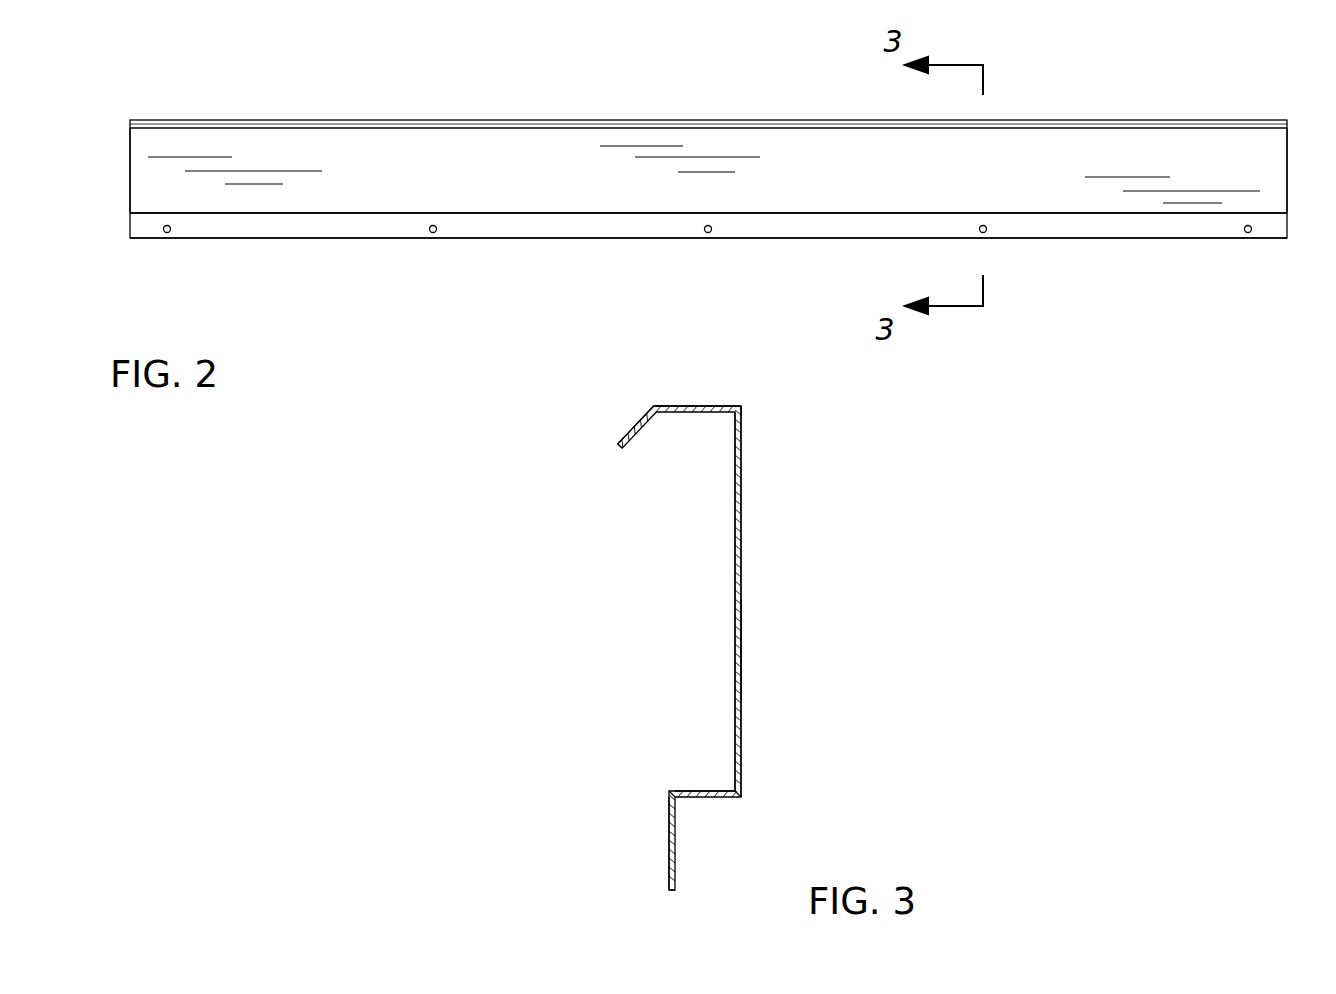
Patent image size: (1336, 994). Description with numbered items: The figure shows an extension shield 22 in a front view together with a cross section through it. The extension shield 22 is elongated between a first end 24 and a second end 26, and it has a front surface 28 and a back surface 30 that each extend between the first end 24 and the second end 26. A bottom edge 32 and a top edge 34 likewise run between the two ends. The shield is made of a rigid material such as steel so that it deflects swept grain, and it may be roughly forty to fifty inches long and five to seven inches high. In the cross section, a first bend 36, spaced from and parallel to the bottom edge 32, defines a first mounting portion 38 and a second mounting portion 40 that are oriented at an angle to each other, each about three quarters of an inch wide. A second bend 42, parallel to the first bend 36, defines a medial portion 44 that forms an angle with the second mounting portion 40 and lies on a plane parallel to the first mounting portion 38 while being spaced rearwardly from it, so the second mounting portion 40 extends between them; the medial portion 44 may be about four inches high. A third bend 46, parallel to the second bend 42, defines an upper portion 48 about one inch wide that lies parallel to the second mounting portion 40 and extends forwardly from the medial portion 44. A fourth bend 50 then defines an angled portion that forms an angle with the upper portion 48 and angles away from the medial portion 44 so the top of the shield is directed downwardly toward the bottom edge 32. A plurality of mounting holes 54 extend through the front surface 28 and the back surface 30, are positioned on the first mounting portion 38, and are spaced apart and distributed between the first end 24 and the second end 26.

In FIG. 2, the extension shield 22 is at (1222, 96).
In FIG. 3, the extension shield 22 is at (770, 447).
In FIG. 2, the first end 24 is at (130, 172).
In FIG. 2, the second end 26 is at (1288, 172).
In FIG. 2, the front surface 28 is at (798, 160).
In FIG. 3, the front surface 28 is at (735, 590).
In FIG. 3, the back surface 30 is at (742, 608).
In FIG. 3, the bottom edge 32 is at (672, 892).
In FIG. 3, the top edge 34 is at (620, 447).
In FIG. 3, the first bend 36 is at (670, 791).
In FIG. 2, the first mounting portion 38 is at (1160, 228).
In FIG. 3, the first mounting portion 38 is at (668, 842).
In FIG. 3, the second mounting portion 40 is at (700, 790).
In FIG. 3, the second bend 42 is at (742, 800).
In FIG. 2, the medial portion 44 is at (1065, 188).
In FIG. 3, the medial portion 44 is at (742, 640).
In FIG. 3, the third bend 46 is at (742, 407).
In FIG. 3, the upper portion 48 is at (698, 405).
In FIG. 3, the fourth bend 50 is at (655, 405).
In FIG. 2, the mounting holes 54 is at (171, 252).
In FIG. 3, the mounting holes 54 is at (624, 414).